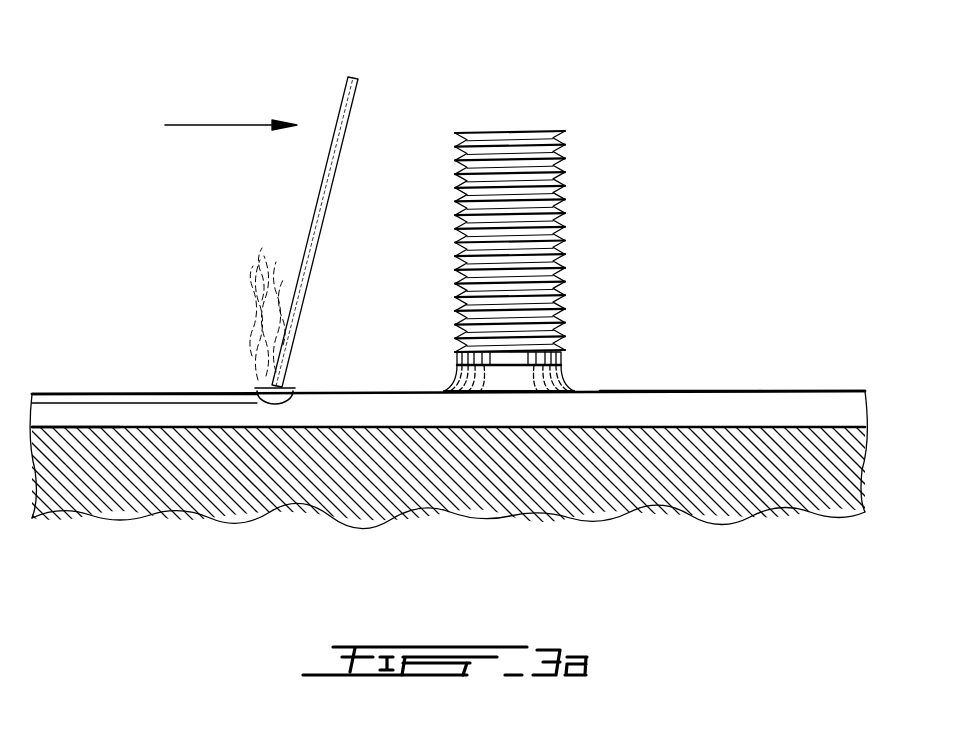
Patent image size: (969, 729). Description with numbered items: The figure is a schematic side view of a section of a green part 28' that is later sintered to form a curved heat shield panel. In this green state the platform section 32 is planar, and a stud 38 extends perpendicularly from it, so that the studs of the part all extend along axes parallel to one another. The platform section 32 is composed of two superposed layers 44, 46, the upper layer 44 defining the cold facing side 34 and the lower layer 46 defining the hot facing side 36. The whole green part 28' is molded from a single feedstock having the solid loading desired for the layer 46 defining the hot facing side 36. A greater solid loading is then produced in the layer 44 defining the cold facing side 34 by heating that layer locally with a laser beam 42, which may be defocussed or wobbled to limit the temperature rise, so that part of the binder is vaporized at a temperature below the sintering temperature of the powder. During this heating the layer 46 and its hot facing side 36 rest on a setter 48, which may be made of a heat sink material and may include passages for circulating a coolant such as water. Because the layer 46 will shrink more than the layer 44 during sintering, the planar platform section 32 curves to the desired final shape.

The green part 28' is at (70, 141).
The platform section 32 is at (675, 399).
The cold facing side 34 is at (804, 391).
The hot facing side 36 is at (800, 427).
The stud 38 is at (565, 133).
The laser beam 42 is at (348, 108).
The layer defining the cold facing side 44 is at (173, 397).
The layer defining the hot facing side 46 is at (68, 413).
The setter 48 is at (627, 488).